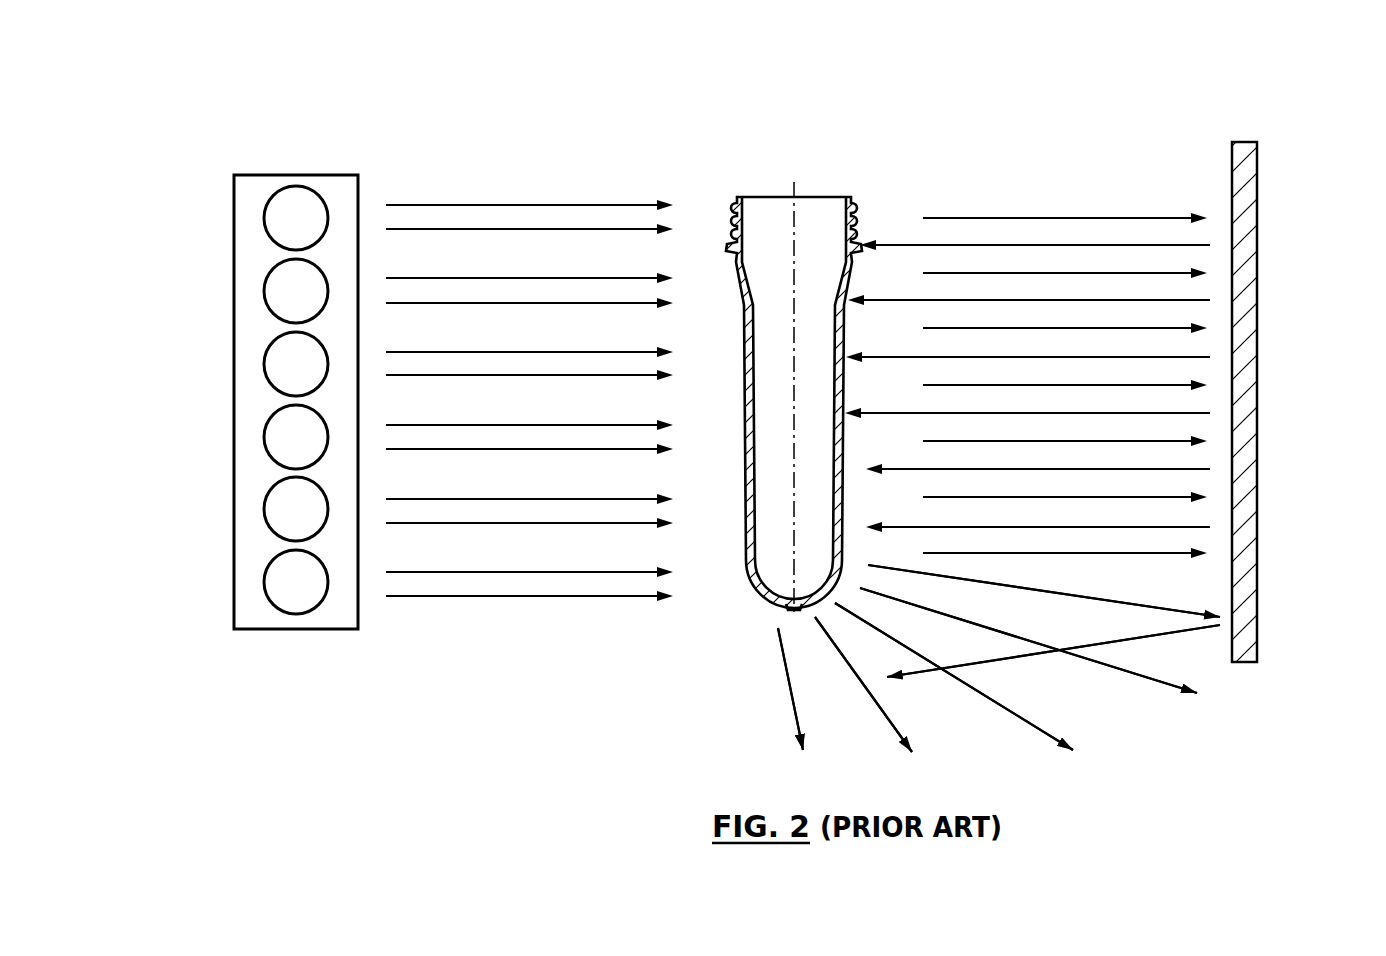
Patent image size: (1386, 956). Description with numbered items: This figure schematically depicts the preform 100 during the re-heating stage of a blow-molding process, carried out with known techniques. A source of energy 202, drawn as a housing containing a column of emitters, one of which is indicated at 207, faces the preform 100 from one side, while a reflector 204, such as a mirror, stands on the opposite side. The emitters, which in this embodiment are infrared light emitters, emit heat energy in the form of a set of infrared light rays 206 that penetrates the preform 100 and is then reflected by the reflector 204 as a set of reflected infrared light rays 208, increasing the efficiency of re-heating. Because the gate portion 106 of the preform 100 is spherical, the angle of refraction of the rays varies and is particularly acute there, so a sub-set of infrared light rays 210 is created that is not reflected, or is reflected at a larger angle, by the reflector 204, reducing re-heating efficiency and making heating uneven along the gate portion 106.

The preform 100 is at (818, 183).
The gate portion 106 is at (760, 592).
The source of energy 202 is at (288, 175).
The reflector 204 is at (1248, 142).
The set of infrared light rays 206 is at (509, 200).
The light emitting element 207 is at (267, 318).
The set of reflected infrared light rays 208 is at (1190, 246).
The sub-set of infrared light rays 210 is at (1017, 749).